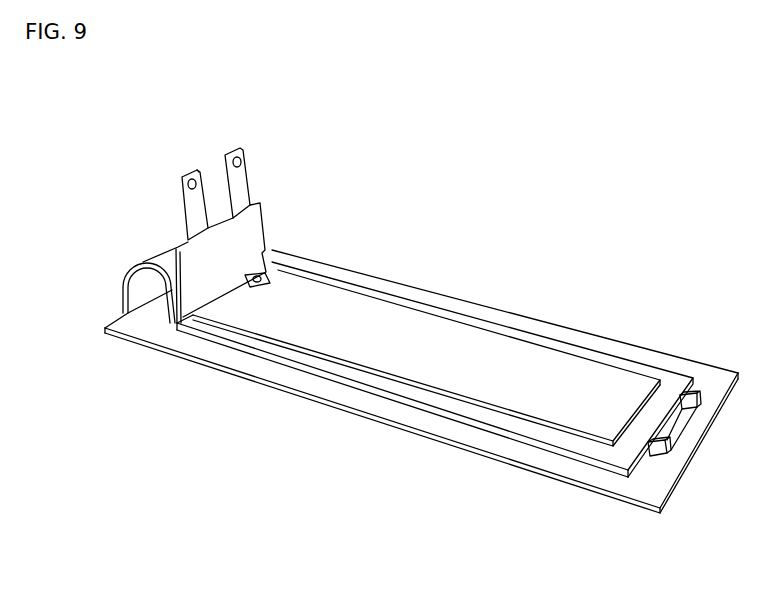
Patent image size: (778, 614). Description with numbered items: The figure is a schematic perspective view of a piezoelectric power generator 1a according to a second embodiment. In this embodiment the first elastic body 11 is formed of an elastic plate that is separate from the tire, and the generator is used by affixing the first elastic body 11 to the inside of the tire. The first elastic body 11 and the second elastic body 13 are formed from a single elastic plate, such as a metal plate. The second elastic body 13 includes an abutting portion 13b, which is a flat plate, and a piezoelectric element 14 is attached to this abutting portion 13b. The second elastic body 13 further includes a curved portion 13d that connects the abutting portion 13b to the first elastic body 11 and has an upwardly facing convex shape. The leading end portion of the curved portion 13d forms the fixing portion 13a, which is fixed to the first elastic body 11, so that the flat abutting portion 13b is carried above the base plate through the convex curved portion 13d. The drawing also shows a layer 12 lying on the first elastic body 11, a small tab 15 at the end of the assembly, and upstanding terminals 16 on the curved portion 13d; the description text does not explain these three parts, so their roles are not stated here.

The piezoelectric power generator 1a is at (601, 251).
The first elastic body 11 is at (509, 474).
The insulating sheet on base plate 12 is at (549, 306).
The second elastic body 13 is at (623, 351).
The fixing portion 13a is at (122, 315).
The abutting portion 13b is at (375, 383).
The curved portion 13d is at (151, 247).
The piezoelectric element 14 is at (494, 325).
The bracket tab 15 is at (697, 388).
The terminal tabs 16 is at (259, 217).